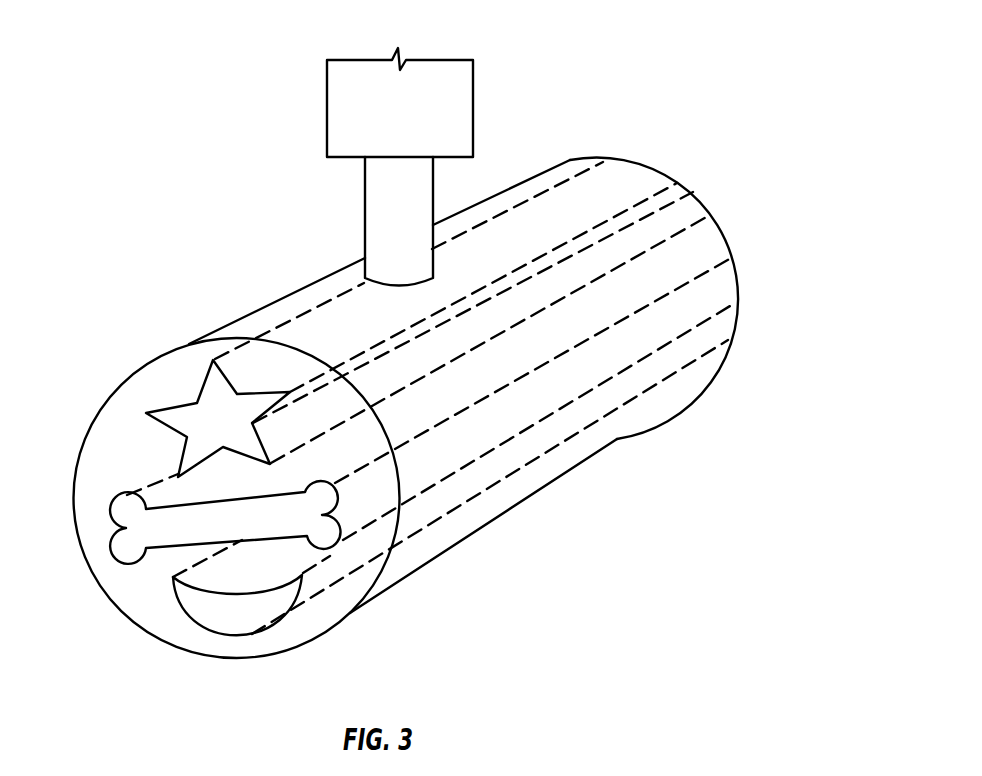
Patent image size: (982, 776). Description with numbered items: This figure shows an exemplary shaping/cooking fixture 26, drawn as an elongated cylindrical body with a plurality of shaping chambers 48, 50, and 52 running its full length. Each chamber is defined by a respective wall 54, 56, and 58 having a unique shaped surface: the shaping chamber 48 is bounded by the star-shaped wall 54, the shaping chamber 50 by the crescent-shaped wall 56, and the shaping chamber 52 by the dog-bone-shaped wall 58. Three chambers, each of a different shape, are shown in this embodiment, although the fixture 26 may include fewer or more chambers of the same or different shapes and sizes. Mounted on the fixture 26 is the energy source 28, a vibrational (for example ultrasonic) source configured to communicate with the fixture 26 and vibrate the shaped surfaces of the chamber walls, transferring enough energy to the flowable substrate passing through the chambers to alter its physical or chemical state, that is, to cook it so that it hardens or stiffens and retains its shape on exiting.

The shaping/cooking fixture 26 is at (617, 441).
The energy source 28 is at (325, 125).
The shaping chamber 48 is at (171, 378).
The shaping chamber 50 is at (209, 649).
The shaping chamber 52 is at (234, 565).
The wall 54 is at (153, 410).
The wall 56 is at (250, 637).
The wall 58 is at (113, 498).